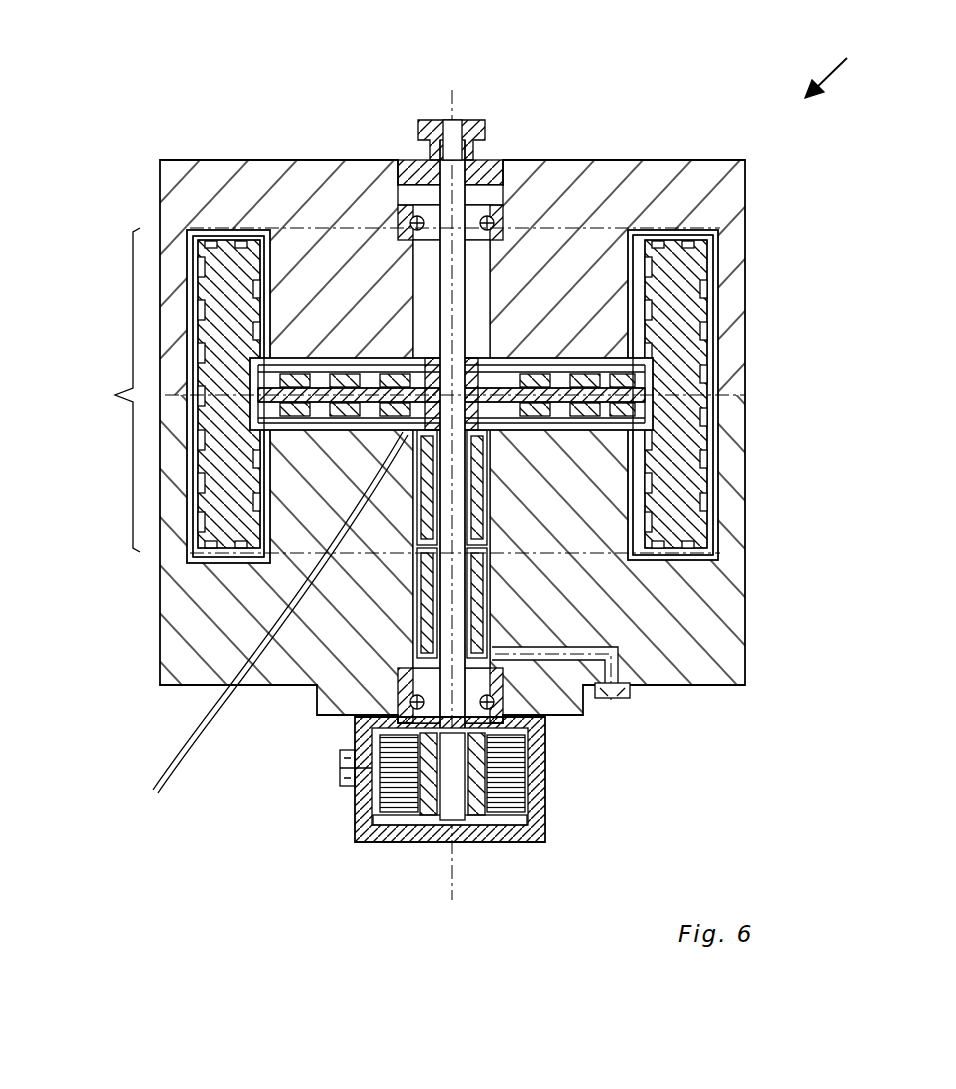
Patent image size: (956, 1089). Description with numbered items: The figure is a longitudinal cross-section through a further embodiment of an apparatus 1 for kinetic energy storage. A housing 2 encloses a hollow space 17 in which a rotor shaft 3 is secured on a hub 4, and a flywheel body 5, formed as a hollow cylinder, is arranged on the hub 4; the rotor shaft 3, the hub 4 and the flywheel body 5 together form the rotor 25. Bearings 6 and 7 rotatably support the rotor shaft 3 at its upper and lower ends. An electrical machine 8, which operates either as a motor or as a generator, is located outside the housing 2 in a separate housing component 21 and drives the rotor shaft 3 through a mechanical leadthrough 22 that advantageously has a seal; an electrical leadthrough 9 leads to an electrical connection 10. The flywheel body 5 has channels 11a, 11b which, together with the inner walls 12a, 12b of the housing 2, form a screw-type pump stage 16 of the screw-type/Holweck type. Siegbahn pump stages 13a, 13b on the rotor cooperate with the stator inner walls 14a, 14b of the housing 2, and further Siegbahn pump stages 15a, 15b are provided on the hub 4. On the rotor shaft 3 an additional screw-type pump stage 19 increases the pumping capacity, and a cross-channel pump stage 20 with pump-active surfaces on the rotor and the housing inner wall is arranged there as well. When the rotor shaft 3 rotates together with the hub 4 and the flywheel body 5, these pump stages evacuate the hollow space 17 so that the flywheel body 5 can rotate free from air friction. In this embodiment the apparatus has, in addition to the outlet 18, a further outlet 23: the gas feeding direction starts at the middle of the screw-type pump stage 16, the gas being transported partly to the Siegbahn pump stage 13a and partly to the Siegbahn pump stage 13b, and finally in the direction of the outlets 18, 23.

The apparatus 1 is at (837, 63).
The housing 2 is at (173, 200).
The rotor shaft 3 is at (430, 400).
The hub 4 is at (418, 385).
The flywheel body 5 is at (680, 338).
The bearing 6 is at (433, 293).
The bearing 7 is at (395, 723).
The electrical machine 8 is at (362, 845).
The electrical leadthrough 9 is at (375, 790).
The electrical connection 10 is at (345, 770).
The channels 11a is at (200, 352).
The channels 11b is at (200, 500).
The inner wall 12a is at (205, 233).
The inner wall 12b is at (270, 262).
The Siegbahn pump stage 13a is at (222, 247).
The Siegbahn pump stage 13b is at (198, 567).
The inner wall 14a is at (190, 268).
The inner wall 14b is at (200, 567).
The Siegbahn pump stage 15a is at (340, 375).
The Siegbahn pump stage 15b is at (375, 430).
The screw-type pump stage 16 is at (106, 390).
The hollow space 17 is at (270, 623).
The outlet 18 is at (607, 700).
The screw-type pump stage 19 is at (490, 474).
The cross-channel pump stage 20 is at (480, 628).
The housing component 21 is at (415, 835).
The mechanical leadthrough 22 is at (560, 665).
The outlet 23 is at (462, 120).
The rotor 25 is at (633, 352).